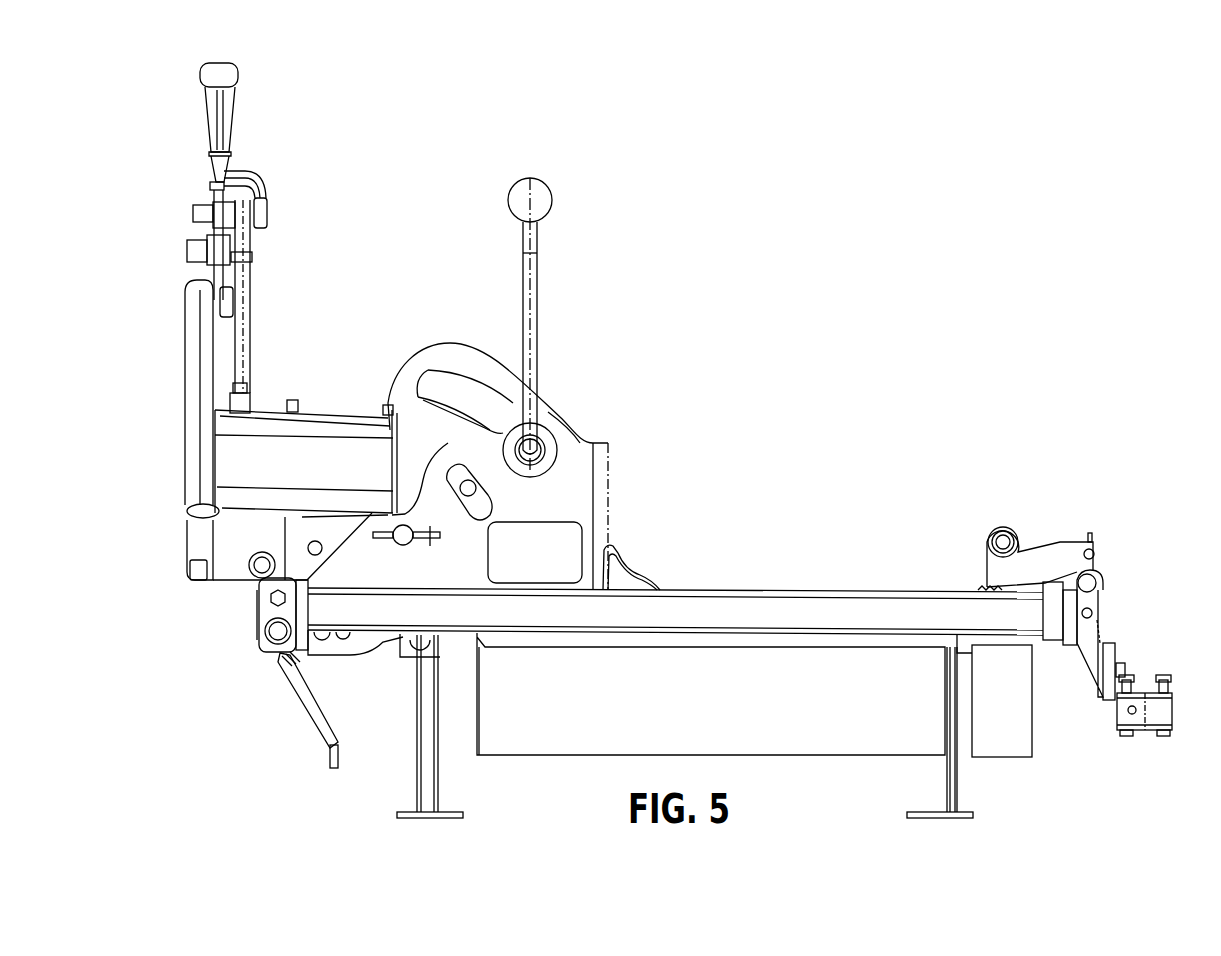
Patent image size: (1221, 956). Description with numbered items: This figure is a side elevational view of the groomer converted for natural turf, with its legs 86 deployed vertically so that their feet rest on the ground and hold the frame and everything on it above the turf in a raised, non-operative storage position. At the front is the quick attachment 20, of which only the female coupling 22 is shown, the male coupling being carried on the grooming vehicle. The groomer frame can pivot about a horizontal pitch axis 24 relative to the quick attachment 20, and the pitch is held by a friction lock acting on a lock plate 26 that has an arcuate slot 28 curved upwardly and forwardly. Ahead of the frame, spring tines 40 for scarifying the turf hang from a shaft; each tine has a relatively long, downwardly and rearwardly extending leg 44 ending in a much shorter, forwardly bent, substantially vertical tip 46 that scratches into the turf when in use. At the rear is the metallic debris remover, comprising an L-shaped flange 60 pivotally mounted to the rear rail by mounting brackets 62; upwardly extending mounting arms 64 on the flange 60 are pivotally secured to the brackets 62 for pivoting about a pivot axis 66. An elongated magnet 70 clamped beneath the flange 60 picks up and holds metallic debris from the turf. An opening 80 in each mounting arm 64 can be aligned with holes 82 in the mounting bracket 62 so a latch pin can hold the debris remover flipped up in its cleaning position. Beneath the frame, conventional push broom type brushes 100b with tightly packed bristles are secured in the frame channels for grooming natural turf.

The quick attachment 20 is at (268, 148).
The female coupling 22 is at (218, 372).
The horizontal pitch axis 24 is at (400, 540).
The lock plate 26 is at (402, 370).
The arcuate slot 28 is at (457, 387).
The spring tines 40 is at (314, 716).
The leg 44 is at (313, 687).
The tip 46 is at (338, 755).
The L-shaped flange 60 is at (1117, 650).
The mounting brackets 62 is at (1065, 541).
The mounting arms 64 is at (1087, 647).
The pivot axis 66 is at (1097, 573).
The magnet 70 is at (1125, 700).
The opening 80 is at (1092, 613).
The holes 82 is at (1094, 553).
The legs 86 is at (418, 695).
The brushes 100b is at (757, 680).